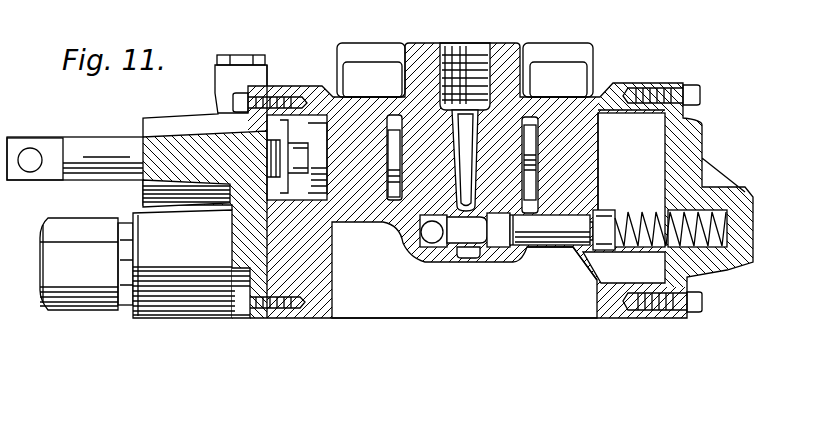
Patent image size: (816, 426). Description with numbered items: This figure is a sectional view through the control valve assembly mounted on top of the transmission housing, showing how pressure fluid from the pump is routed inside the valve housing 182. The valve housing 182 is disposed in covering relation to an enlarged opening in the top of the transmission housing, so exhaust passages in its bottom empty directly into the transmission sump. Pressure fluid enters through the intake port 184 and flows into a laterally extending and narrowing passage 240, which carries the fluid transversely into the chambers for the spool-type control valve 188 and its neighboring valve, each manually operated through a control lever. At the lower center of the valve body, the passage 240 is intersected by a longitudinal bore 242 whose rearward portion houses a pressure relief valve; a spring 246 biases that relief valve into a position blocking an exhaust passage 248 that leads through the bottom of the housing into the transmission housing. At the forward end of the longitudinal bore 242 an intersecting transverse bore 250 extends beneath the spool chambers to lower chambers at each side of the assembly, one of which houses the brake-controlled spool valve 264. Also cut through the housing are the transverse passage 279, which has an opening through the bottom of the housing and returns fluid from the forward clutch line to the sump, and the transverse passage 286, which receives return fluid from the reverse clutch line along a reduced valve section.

The valve housing 182 is at (310, 318).
The intake port 184 is at (470, 55).
The spool-type control valve 188 is at (97, 153).
The passage 240 is at (467, 127).
The longitudinal bore 242 is at (447, 242).
The spring 246 is at (633, 210).
The exhaust passage 248 is at (533, 250).
The transverse bore 250 is at (428, 242).
The brake-controlled spool valve 264 is at (101, 217).
The transverse passage 279 is at (394, 120).
The transverse passage 286 is at (532, 130).